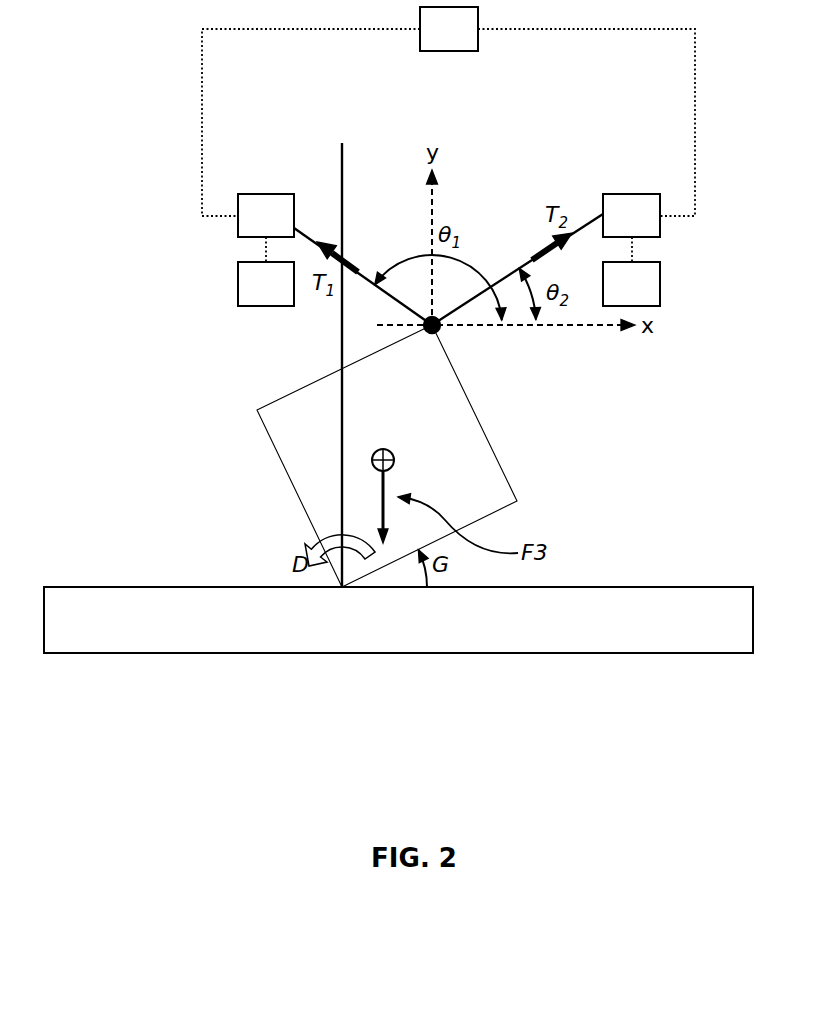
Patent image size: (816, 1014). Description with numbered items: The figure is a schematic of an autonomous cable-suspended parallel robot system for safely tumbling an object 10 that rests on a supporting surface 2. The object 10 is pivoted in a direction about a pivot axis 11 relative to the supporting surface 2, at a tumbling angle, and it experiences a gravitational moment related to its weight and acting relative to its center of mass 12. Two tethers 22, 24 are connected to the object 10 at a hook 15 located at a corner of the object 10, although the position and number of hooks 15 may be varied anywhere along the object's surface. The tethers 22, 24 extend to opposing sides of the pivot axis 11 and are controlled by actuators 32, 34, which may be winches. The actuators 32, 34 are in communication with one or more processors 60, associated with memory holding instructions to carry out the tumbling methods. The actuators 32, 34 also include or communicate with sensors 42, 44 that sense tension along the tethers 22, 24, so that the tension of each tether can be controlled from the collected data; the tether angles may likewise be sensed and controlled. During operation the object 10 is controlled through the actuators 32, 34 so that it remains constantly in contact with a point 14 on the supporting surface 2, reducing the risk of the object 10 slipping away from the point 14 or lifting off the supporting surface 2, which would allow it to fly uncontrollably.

The supporting surface 2 is at (76, 594).
The object 10 is at (270, 412).
The pivot axis 11 is at (342, 166).
The center of mass 12 is at (394, 460).
The point 14 is at (342, 600).
The hook 15 is at (447, 335).
The tether 22 is at (316, 241).
The tether 24 is at (585, 226).
The actuator 32 is at (281, 229).
The actuator 34 is at (647, 229).
The sensor 42 is at (281, 297).
The sensor 44 is at (647, 297).
The processor 60 is at (464, 42).